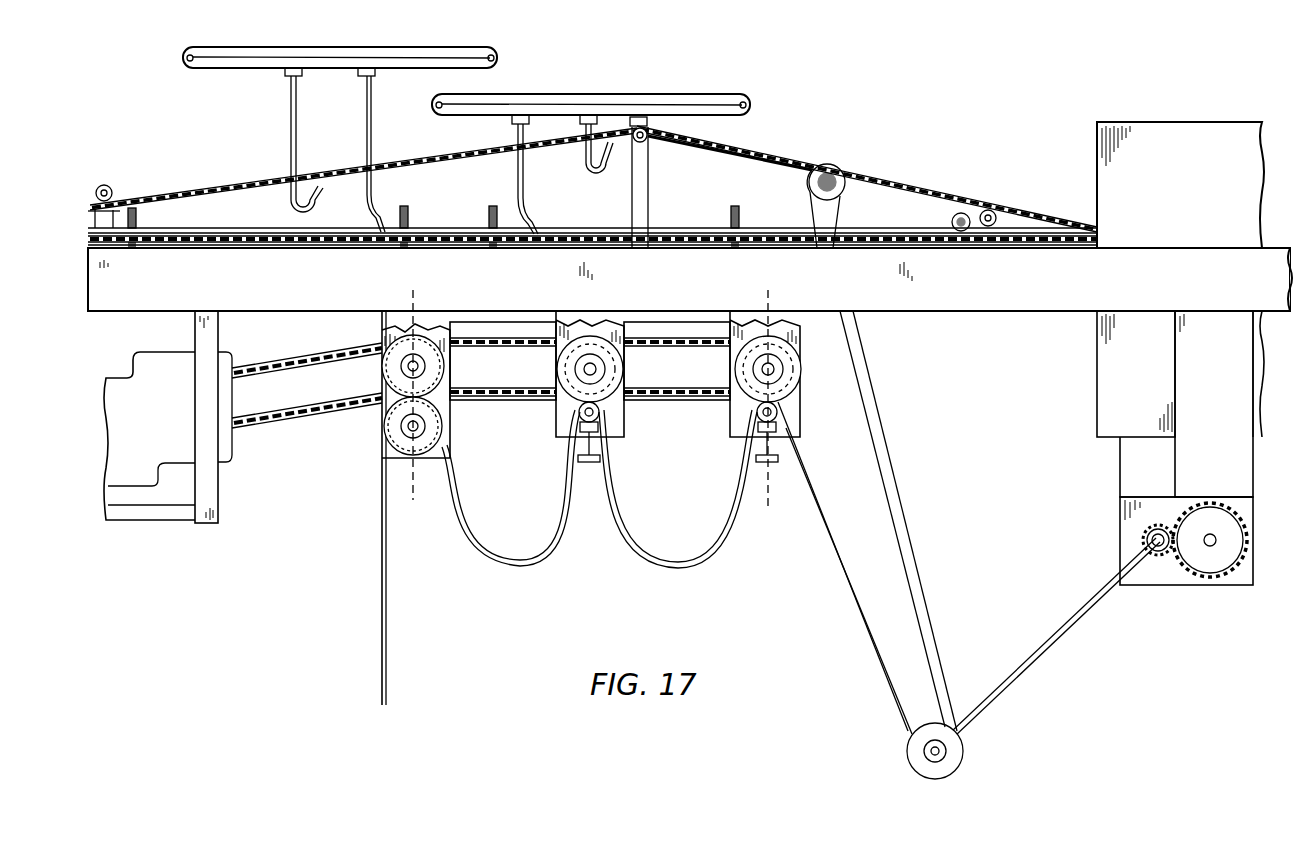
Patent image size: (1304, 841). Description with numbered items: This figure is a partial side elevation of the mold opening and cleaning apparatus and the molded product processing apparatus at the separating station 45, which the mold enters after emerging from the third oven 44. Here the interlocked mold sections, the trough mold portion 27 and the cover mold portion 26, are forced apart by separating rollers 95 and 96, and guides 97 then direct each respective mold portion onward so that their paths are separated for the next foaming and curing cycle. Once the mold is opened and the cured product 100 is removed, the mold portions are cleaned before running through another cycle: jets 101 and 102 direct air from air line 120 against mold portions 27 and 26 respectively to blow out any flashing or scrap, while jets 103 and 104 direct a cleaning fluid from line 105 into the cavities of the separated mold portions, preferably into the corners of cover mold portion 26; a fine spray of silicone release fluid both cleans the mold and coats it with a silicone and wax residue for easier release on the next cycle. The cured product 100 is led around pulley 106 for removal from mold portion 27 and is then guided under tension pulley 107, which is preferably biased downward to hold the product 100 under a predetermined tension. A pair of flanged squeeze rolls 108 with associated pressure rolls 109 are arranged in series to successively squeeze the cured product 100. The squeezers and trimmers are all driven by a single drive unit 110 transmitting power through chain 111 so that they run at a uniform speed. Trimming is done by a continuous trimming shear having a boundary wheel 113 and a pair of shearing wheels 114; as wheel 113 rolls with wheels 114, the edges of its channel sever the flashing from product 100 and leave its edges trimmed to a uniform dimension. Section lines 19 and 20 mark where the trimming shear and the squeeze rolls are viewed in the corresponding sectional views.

The section line 19- 19 is at (438, 289).
The section line 20- 20 is at (793, 289).
The cover mold portion 26 is at (758, 237).
The trough mold portion 27 is at (778, 155).
The third oven 44 is at (1097, 152).
The separating station 45 is at (948, 143).
The separating roller 95 is at (990, 209).
The separating roller 96 is at (951, 222).
The guides 97 is at (137, 218).
The cured product 100 is at (868, 405).
The air jet 101 is at (599, 172).
The air jet 102 is at (530, 212).
The cleaning fluid jet 103 is at (372, 191).
The cleaning fluid jet 104 is at (317, 201).
The cleaning fluid line 105 is at (224, 59).
The pulley 106 is at (838, 196).
The tension pulley 107 is at (964, 757).
The flanged squeeze rolls 108 is at (623, 369).
The pressure rolls 109 is at (578, 413).
The drive unit 110 is at (160, 352).
The chain 111 is at (305, 415).
The boundary wheel 113 is at (426, 367).
The shearing wheels 114 is at (436, 436).
The air line 120 is at (551, 104).